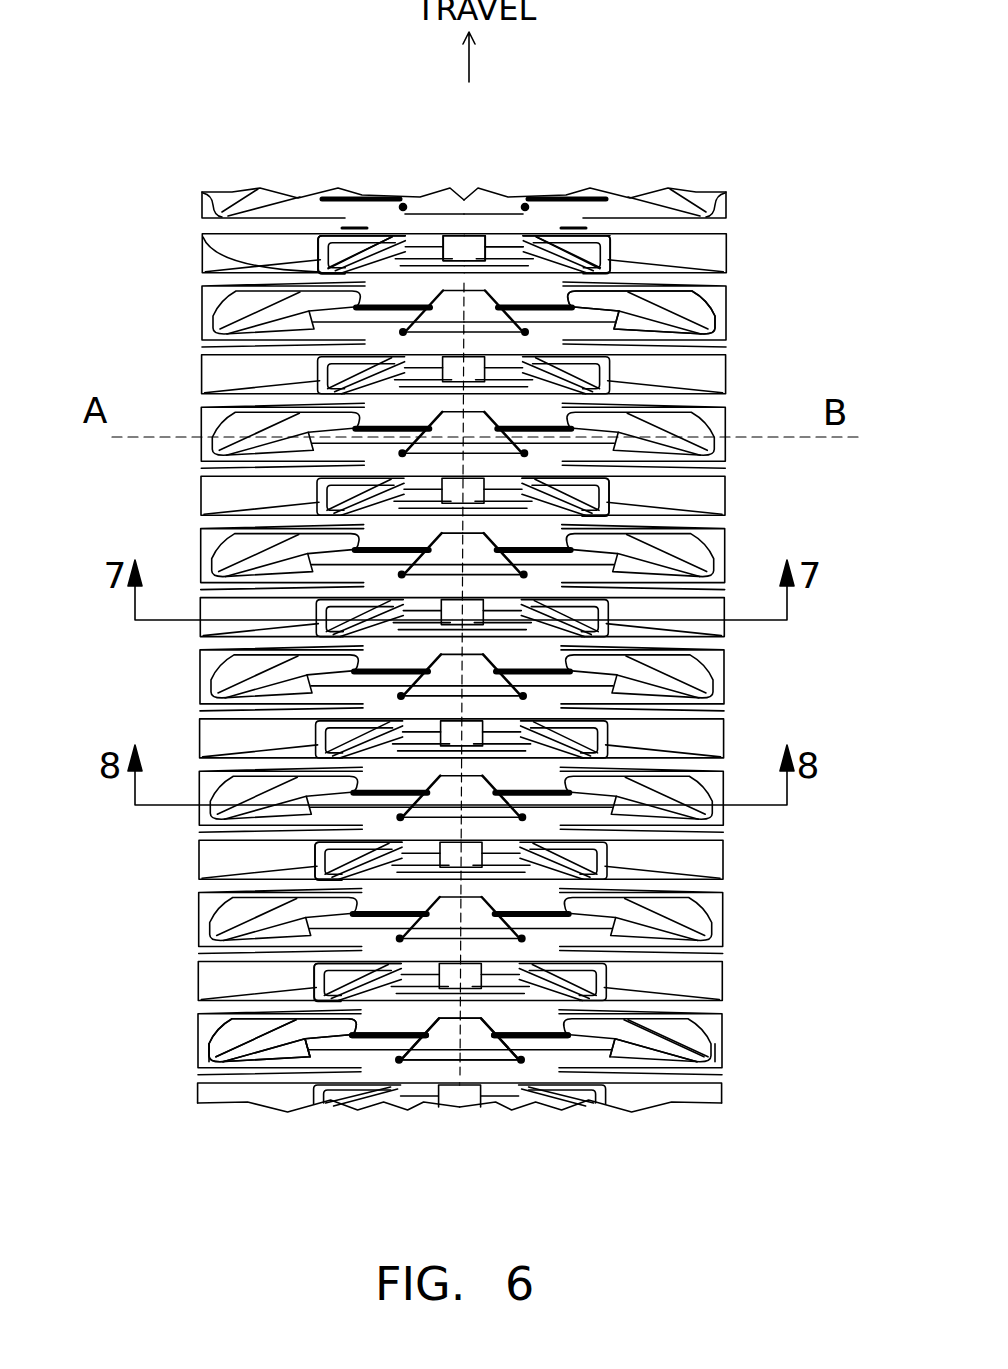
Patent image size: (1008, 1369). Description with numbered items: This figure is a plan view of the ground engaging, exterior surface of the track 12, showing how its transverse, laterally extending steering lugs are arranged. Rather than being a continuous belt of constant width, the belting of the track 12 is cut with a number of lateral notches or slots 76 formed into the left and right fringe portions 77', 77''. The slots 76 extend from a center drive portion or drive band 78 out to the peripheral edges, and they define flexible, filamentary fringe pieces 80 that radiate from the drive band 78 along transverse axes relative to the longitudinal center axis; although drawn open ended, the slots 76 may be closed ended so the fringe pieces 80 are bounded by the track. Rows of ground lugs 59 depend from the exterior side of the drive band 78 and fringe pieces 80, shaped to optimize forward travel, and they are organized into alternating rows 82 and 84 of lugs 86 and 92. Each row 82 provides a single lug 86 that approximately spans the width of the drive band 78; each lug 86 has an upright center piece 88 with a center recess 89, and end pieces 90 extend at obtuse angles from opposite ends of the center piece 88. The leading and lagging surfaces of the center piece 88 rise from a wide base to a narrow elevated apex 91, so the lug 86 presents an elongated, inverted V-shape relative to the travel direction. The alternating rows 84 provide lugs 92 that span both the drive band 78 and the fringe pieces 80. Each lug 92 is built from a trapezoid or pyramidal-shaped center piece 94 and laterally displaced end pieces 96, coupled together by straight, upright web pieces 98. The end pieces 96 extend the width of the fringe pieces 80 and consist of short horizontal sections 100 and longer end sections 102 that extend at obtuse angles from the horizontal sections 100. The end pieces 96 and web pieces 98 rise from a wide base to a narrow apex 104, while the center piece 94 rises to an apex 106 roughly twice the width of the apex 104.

The track 12 is at (728, 193).
The ground lugs 59 is at (710, 305).
The slots 76 is at (202, 1050).
The left fringe portion 77' is at (270, 177).
The right fringe portion 77'' is at (641, 185).
The center drive portion or drive band 78 is at (605, 147).
The flexible track pieces or filamentary fringe pieces 80 is at (205, 340).
The rows of lugs 82 is at (205, 518).
The alternating rows of lugs 84 is at (205, 693).
The lug 86 is at (343, 237).
The center piece 88 is at (430, 236).
The center recess 89 is at (530, 200).
The end pieces 90 is at (348, 246).
The apex 91 is at (470, 204).
The lug 92 is at (213, 916).
The center piece 94 is at (465, 1052).
The end pieces 96 is at (251, 1052).
The web pieces 98 is at (375, 1042).
The horizontal sections 100 is at (312, 1040).
The end sections 102 is at (208, 1072).
The apex 104 is at (342, 1048).
The apex 106 is at (443, 1062).